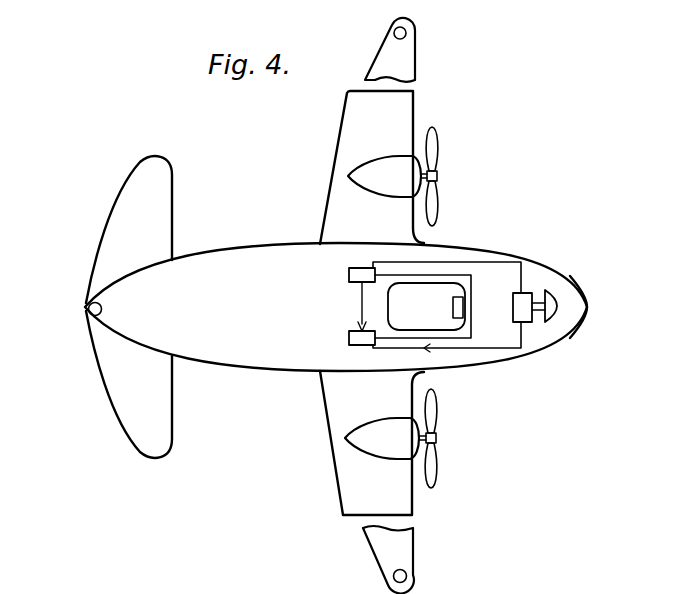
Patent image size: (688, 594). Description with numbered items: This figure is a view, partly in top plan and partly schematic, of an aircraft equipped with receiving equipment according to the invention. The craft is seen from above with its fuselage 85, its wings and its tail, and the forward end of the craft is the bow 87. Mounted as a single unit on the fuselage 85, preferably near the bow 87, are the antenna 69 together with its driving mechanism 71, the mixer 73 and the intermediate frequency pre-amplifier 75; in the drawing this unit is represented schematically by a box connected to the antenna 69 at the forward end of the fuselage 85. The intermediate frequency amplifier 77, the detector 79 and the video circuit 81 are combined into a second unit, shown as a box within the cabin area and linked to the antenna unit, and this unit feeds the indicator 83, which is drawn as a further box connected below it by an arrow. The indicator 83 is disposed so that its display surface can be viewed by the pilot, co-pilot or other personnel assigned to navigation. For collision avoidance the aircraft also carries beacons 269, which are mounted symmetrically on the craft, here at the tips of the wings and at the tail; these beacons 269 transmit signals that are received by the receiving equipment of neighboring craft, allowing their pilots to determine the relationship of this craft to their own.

The beacon 269 is at (393, 33).
The intermediate frequency amplifier 77 is at (302, 278).
The detector 79 is at (302, 278).
The video circuit 81 is at (349, 276).
The indicator 83 is at (349, 340).
The driving mechanism 71 is at (540, 272).
The mixer 73 is at (540, 272).
The intermediate frequency pre-amplifier 75 is at (525, 287).
The antenna 69 is at (556, 298).
The fuselage 85 is at (525, 354).
The bow 87 is at (589, 308).